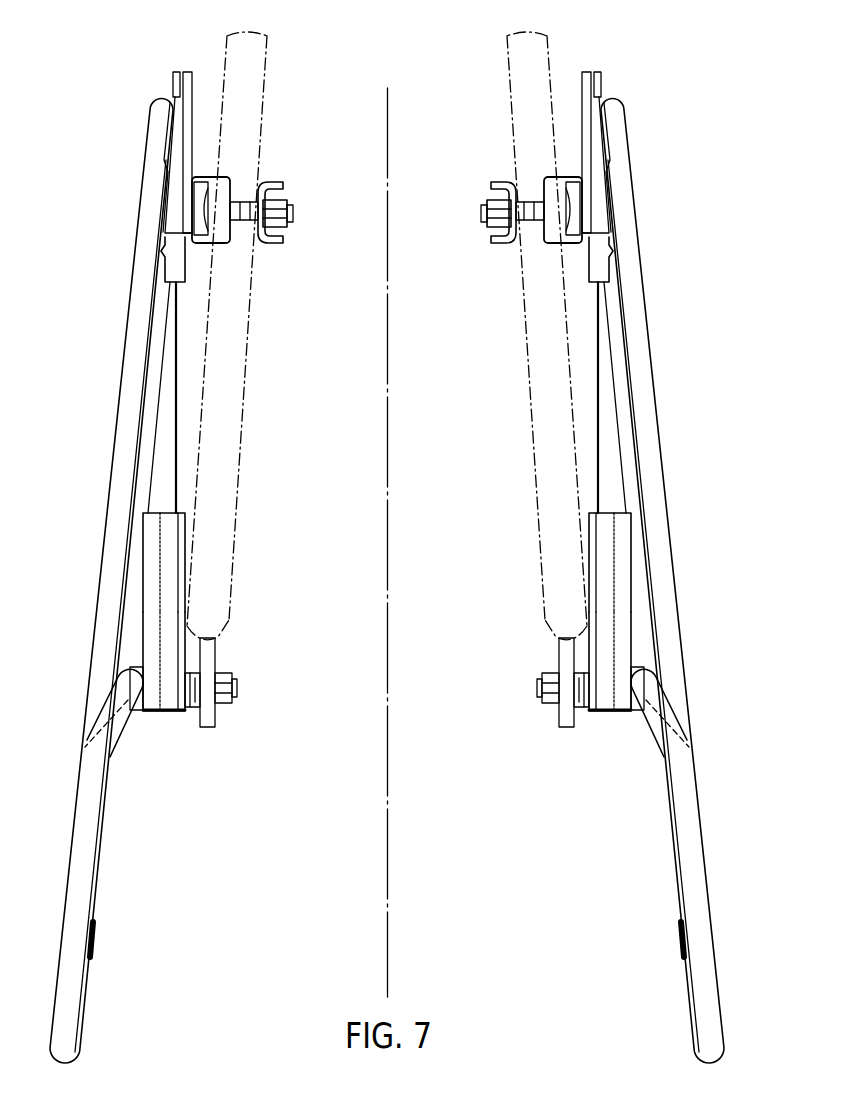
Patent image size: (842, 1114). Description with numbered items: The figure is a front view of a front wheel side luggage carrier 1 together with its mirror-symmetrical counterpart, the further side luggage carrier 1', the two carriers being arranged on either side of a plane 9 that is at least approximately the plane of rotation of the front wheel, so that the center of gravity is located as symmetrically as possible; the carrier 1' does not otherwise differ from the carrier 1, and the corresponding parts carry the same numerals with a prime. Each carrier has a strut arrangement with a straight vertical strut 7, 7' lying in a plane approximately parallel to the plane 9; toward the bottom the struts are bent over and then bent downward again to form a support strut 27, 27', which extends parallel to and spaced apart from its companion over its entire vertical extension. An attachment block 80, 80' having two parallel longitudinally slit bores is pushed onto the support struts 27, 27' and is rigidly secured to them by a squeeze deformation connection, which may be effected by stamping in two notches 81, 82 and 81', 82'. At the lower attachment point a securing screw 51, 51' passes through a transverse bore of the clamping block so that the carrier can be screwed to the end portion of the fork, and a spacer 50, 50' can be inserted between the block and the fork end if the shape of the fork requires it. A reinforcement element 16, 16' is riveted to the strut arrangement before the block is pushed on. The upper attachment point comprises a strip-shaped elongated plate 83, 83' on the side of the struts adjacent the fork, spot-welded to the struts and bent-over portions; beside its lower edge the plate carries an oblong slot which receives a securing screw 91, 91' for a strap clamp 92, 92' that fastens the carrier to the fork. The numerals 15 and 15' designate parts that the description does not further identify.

The front wheel side luggage carrier 1 is at (576, 555).
The further side luggage carrier 1' is at (198, 543).
The vertical strut 7 is at (662, 581).
The vertical strut 7' is at (111, 581).
The plane 9 is at (389, 532).
The pivot strut 15 is at (654, 724).
The pivot strut (mirror side) 15' is at (128, 734).
The reinforcement element 16 is at (645, 924).
The reinforcement element 16' is at (133, 945).
The support strut 27 is at (649, 397).
The support strut 27' is at (125, 397).
The spacer 50 is at (581, 698).
The spacer 50' is at (196, 705).
The securing screw 51 is at (538, 695).
The securing screw 51' is at (243, 695).
The attachment block 80 is at (640, 251).
The attachment block 80' is at (144, 259).
The notch 81 is at (564, 661).
The notch 81' is at (209, 661).
The notch 82 is at (564, 562).
The notch 82' is at (215, 562).
The elongated plate 83 is at (622, 157).
The elongated plate 83' is at (163, 157).
The securing screw 91 is at (503, 230).
The securing screw 91' is at (287, 227).
The strap clamp 92 is at (472, 185).
The strap clamp 92' is at (302, 183).